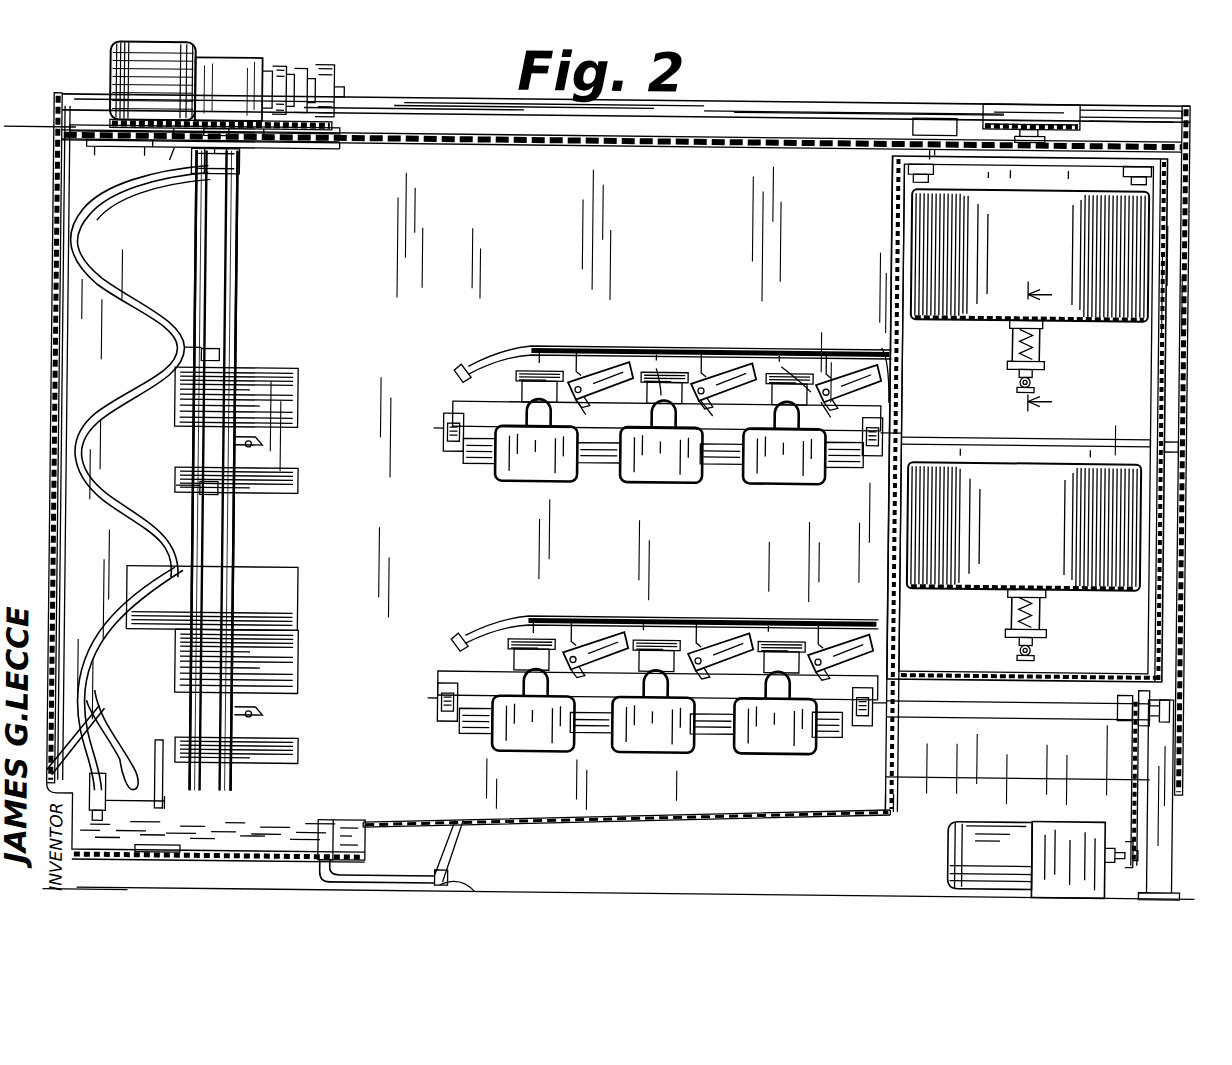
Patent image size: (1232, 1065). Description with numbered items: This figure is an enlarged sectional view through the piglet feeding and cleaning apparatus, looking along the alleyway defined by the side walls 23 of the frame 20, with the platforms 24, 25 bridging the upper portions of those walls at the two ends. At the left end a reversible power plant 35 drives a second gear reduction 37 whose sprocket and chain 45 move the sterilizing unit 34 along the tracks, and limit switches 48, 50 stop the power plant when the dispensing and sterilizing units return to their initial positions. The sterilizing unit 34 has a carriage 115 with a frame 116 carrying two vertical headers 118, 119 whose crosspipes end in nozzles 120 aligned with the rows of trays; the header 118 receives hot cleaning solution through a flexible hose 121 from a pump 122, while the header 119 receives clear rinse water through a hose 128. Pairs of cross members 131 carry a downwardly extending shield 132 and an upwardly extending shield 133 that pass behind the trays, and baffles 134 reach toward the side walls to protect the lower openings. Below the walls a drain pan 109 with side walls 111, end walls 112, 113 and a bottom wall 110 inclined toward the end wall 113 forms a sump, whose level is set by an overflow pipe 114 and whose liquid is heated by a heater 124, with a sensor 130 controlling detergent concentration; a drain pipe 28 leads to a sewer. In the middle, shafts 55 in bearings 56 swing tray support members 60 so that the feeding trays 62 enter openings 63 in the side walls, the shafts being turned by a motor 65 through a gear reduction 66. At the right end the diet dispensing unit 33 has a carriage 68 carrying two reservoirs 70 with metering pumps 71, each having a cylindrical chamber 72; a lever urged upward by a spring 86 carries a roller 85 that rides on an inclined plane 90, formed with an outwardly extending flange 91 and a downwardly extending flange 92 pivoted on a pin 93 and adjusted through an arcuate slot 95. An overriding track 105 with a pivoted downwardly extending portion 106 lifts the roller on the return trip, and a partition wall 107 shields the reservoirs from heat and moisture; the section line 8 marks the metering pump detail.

The section line 8— 8 is at (1046, 348).
The frame 20 is at (1172, 82).
The side walls 23 is at (746, 138).
The platform 24 is at (150, 125).
The platform 25 is at (1025, 118).
The drain pipe 28 is at (446, 857).
The diet dispensing unit 33 is at (1067, 183).
The sterilizing unit 34 is at (259, 291).
The reversible power plant 35 is at (110, 52).
The second gear reduction 37 is at (230, 98).
The chain 45 is at (531, 147).
The limit switch 48 is at (931, 121).
The limit switch 50 is at (38, 127).
The shaft 55 is at (1000, 441).
The bearings 56 is at (445, 425).
The tray support member 60 is at (600, 470).
The feeding trays 62 is at (520, 480).
The openings 63 is at (520, 378).
The motor 65 is at (1001, 805).
The gear reduction 66 is at (1087, 805).
The carriage 68 is at (889, 246).
The reservoirs 70 is at (1090, 316).
The metering pumps 71 is at (1006, 331).
The cylindrical chamber 72 is at (1038, 350).
The roller 85 is at (1016, 375).
The spring 86 is at (1041, 337).
The inclined plane 90 is at (600, 368).
The outwardly extending flange 91 is at (590, 375).
The downwardly extending flange 92 is at (908, 399).
The pivot pin 93 is at (770, 375).
The arcuate slot 95 is at (562, 360).
The overriding track 105 is at (683, 300).
The downwardly extending portion 106 is at (462, 368).
The partition wall 107 is at (888, 523).
The drain pan 109 is at (585, 824).
The bottom wall 110 is at (650, 819).
The side walls 111 is at (482, 816).
The end wall 112 is at (889, 788).
The end wall 113 is at (84, 740).
The overflow pipe 114 is at (327, 823).
The carriage 115 is at (246, 174).
The frame 116 is at (156, 165).
The header 118 is at (193, 240).
The header 119 is at (233, 240).
The nozzles 120 is at (252, 450).
The flexible hose 121 is at (87, 715).
The pump 122 is at (149, 797).
The heater 124 is at (166, 856).
The hose 128 is at (90, 695).
The sensor 130 is at (173, 723).
The cross members 131 is at (200, 359).
The downwardly extending shield 132 is at (297, 410).
The upwardly extending shield 133 is at (298, 492).
The baffles 134 is at (299, 594).